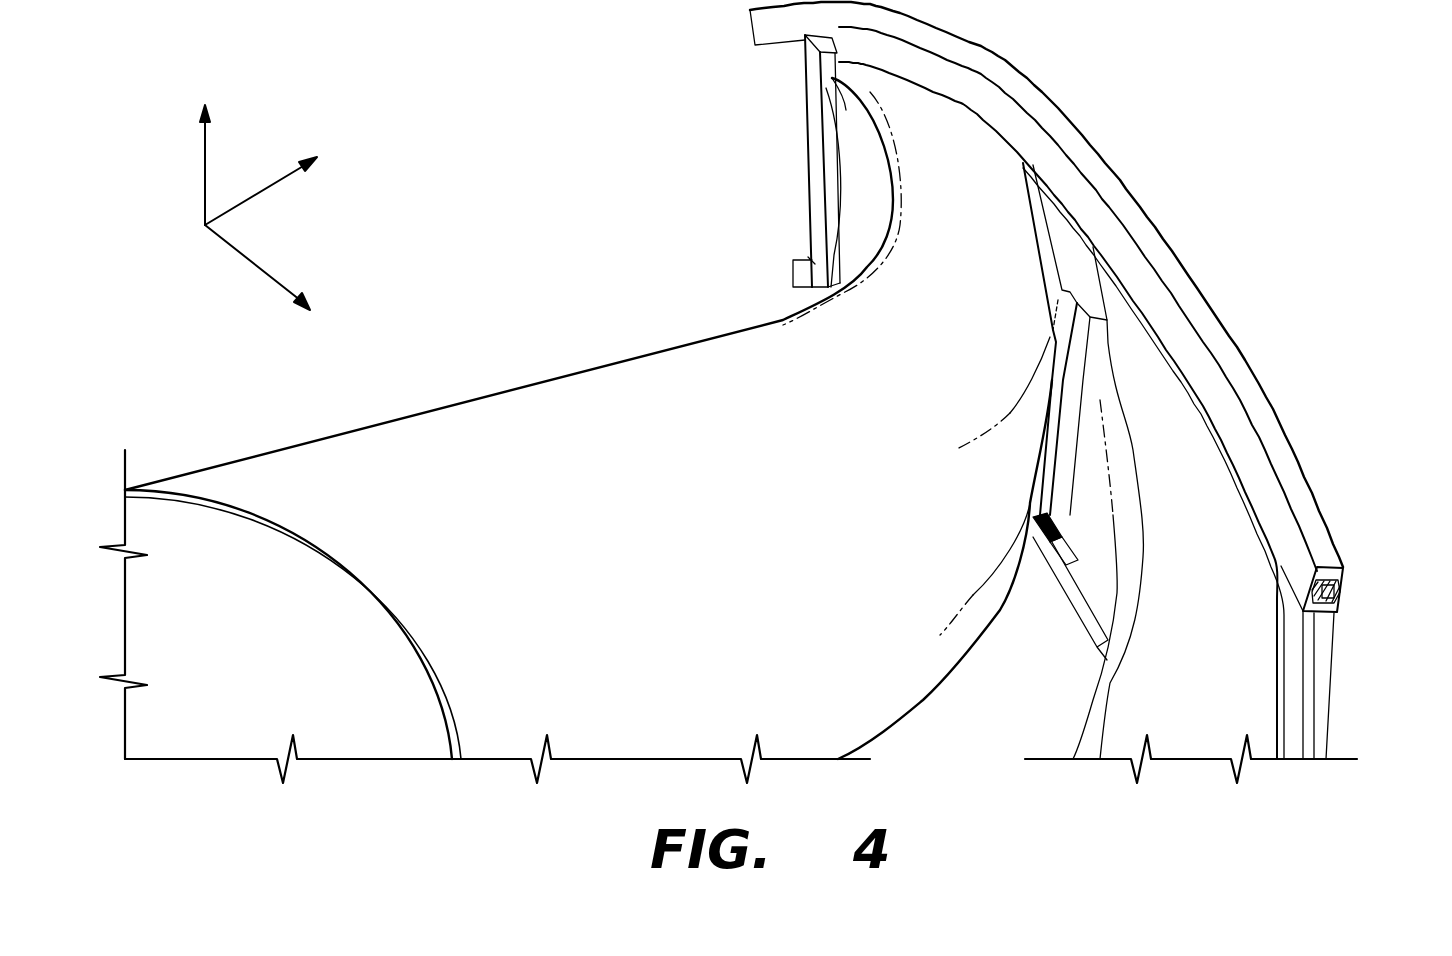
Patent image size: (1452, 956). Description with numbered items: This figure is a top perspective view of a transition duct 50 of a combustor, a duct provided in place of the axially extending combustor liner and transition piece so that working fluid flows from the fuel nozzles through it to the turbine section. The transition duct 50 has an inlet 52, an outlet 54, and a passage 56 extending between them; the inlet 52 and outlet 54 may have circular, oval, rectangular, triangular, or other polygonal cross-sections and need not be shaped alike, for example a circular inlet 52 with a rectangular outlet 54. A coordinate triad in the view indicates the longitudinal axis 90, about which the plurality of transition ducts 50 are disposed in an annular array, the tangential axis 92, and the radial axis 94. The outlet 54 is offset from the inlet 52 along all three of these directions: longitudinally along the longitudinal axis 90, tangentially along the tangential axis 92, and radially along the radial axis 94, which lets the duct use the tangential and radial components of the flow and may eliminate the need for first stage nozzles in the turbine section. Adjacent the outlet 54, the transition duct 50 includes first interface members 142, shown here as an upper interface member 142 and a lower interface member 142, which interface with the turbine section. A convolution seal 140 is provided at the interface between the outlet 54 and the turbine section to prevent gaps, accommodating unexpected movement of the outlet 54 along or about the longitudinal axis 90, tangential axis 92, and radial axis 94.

The transition duct 50 is at (588, 418).
The inlet 52 is at (190, 545).
The outlet 54 is at (764, 109).
The passage 56 is at (552, 405).
The longitudinal axis 90 is at (272, 186).
The tangential axis 92 is at (263, 276).
The radial axis 94 is at (205, 165).
The convolution seal 140 is at (1350, 587).
The first interface member 142 is at (1190, 297).